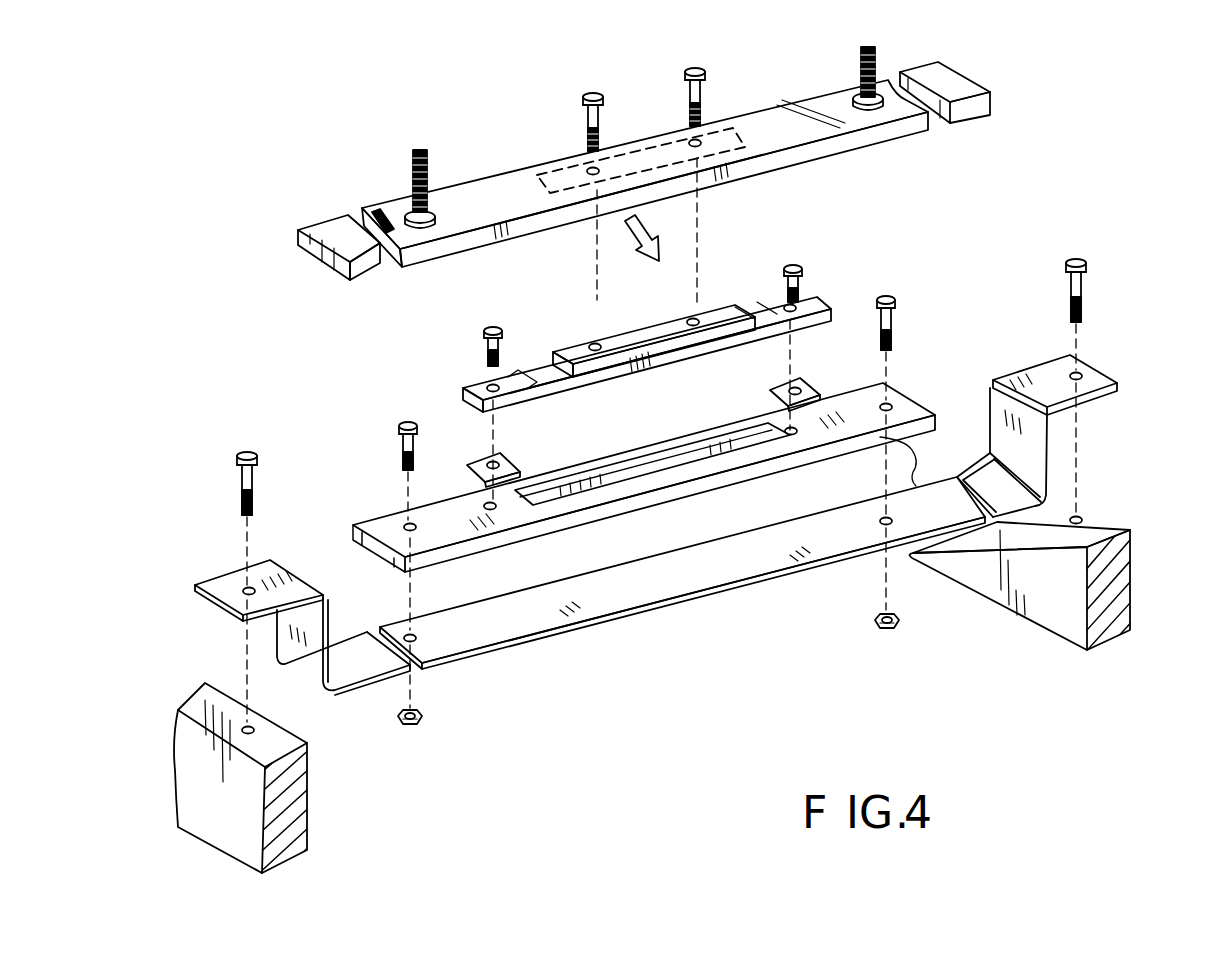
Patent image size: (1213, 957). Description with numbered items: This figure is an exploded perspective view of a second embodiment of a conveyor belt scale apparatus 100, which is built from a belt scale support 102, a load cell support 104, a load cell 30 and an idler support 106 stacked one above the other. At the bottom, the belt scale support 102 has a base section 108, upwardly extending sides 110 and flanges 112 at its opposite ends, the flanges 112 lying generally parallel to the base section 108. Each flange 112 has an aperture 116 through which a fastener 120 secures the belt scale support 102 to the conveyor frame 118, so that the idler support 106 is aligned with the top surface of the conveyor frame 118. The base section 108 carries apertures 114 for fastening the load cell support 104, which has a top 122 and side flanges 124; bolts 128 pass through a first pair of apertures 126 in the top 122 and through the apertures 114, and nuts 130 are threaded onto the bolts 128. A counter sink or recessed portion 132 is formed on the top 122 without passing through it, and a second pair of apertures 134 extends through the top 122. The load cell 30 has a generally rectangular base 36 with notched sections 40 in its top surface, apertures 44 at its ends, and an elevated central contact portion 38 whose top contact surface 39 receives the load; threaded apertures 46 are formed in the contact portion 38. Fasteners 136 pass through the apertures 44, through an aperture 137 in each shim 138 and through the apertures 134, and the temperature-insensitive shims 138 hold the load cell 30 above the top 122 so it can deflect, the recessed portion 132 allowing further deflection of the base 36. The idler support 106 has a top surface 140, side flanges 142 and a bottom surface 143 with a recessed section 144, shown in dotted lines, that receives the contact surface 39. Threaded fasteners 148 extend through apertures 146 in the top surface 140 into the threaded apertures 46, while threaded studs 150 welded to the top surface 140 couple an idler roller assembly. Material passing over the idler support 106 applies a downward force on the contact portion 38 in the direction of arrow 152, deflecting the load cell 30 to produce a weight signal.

The load cell 30 is at (700, 290).
The base 36 is at (462, 392).
The contact portion 38 is at (633, 344).
The top contact surface 39 is at (680, 326).
The notched sections 40 is at (576, 378).
The apertures 44 is at (798, 312).
The threaded apertures 46 is at (590, 344).
The belt scale apparatus 100 is at (663, 666).
The belt scale support 102 is at (592, 627).
The load cell support 104 is at (656, 458).
The idler support 106 is at (1003, 82).
The base section 108 is at (682, 553).
The sides 110 is at (273, 625).
The flanges 112 is at (230, 576).
The apertures 114 is at (413, 634).
The aperture 116 is at (271, 563).
The conveyor frame 118 is at (302, 801).
The fasteners 120 is at (254, 466).
The top 122 is at (380, 524).
The side flanges 124 is at (420, 560).
The first pair of apertures 126 is at (412, 524).
The bolts 128 is at (410, 423).
The nuts 130 is at (420, 726).
The recessed portion 132 is at (656, 470).
The second pair of apertures 134 is at (497, 505).
The fasteners 136 is at (518, 313).
The aperture 137 is at (488, 460).
The shim 138 is at (650, 407).
The top surface 140 is at (468, 195).
The side flanges 142 is at (348, 281).
The bottom surface 143 is at (383, 226).
The recessed section 144 is at (556, 182).
The apertures 146 is at (645, 137).
The threaded fasteners 148 is at (593, 93).
The threaded studs 150 is at (420, 149).
The arrow 152 is at (628, 251).